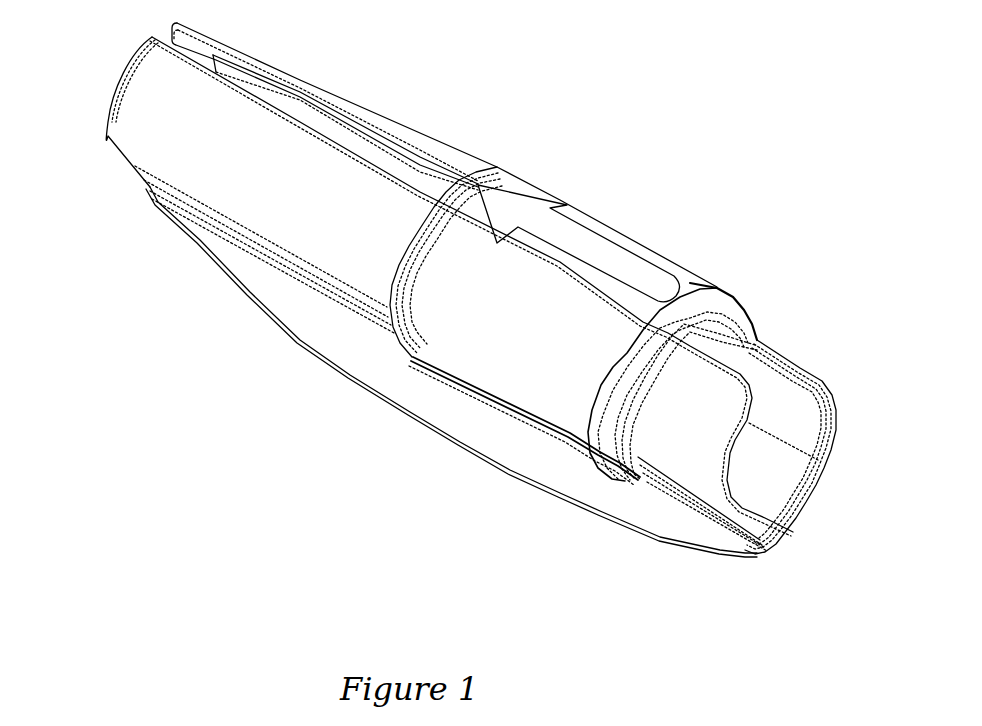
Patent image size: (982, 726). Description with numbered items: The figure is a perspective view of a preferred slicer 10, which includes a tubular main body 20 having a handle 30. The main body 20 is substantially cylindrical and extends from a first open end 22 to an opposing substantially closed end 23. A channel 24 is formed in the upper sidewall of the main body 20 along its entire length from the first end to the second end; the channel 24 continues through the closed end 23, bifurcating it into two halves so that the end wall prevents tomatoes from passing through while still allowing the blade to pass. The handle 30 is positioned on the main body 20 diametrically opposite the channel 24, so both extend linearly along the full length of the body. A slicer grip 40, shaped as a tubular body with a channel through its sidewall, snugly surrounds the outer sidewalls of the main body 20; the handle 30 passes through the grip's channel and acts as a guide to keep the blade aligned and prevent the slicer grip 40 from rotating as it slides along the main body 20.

The slicer 10 is at (698, 163).
The tubular main body 20 is at (130, 124).
The first open end 22 is at (818, 472).
The substantially closed end 23 is at (110, 58).
The channel 24 is at (326, 120).
The handle 30 is at (300, 310).
The slicer grip 40 is at (530, 363).